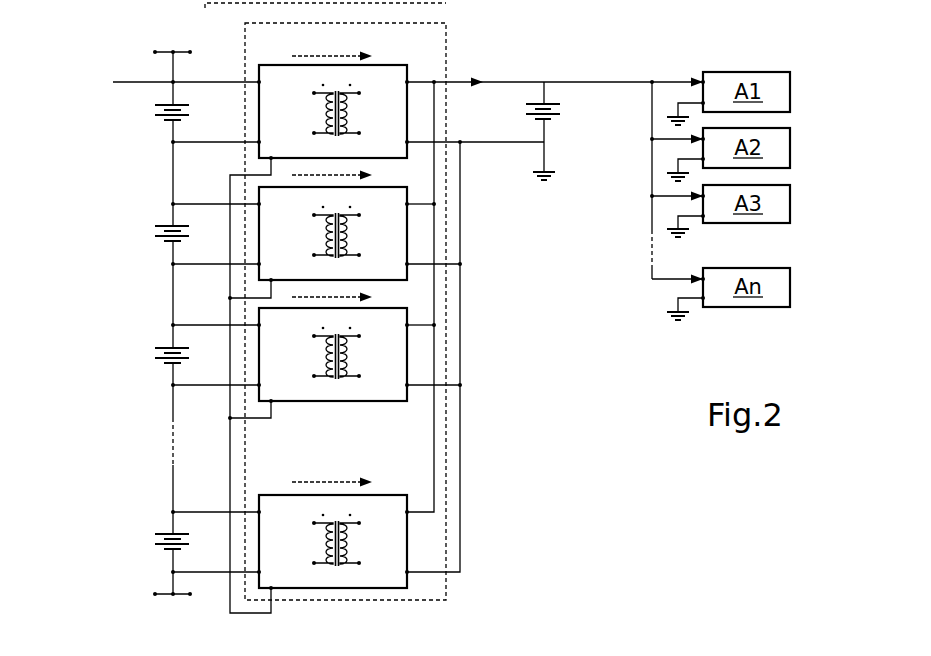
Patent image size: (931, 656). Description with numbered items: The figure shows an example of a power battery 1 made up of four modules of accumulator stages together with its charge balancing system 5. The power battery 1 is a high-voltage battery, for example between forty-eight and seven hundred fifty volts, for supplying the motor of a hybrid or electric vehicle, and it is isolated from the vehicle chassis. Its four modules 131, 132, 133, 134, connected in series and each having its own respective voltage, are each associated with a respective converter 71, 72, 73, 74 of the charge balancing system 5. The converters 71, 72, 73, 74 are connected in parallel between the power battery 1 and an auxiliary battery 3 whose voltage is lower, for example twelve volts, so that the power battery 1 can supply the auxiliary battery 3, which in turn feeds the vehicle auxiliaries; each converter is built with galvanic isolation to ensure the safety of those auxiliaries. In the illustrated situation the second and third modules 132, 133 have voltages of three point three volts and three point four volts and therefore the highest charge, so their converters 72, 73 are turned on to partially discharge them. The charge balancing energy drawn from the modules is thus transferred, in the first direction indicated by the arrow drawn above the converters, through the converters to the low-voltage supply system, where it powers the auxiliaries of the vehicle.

The power battery 1 is at (518, 363).
The auxiliary battery 3 is at (547, 64).
The charge balancing system 5 is at (446, 62).
The converter 71 is at (383, 65).
The converter 72 is at (400, 280).
The converter 73 is at (378, 401).
The converter 74 is at (271, 495).
The module 131 is at (138, 110).
The module 132 is at (138, 231).
The module 133 is at (138, 353).
The module 134 is at (138, 539).